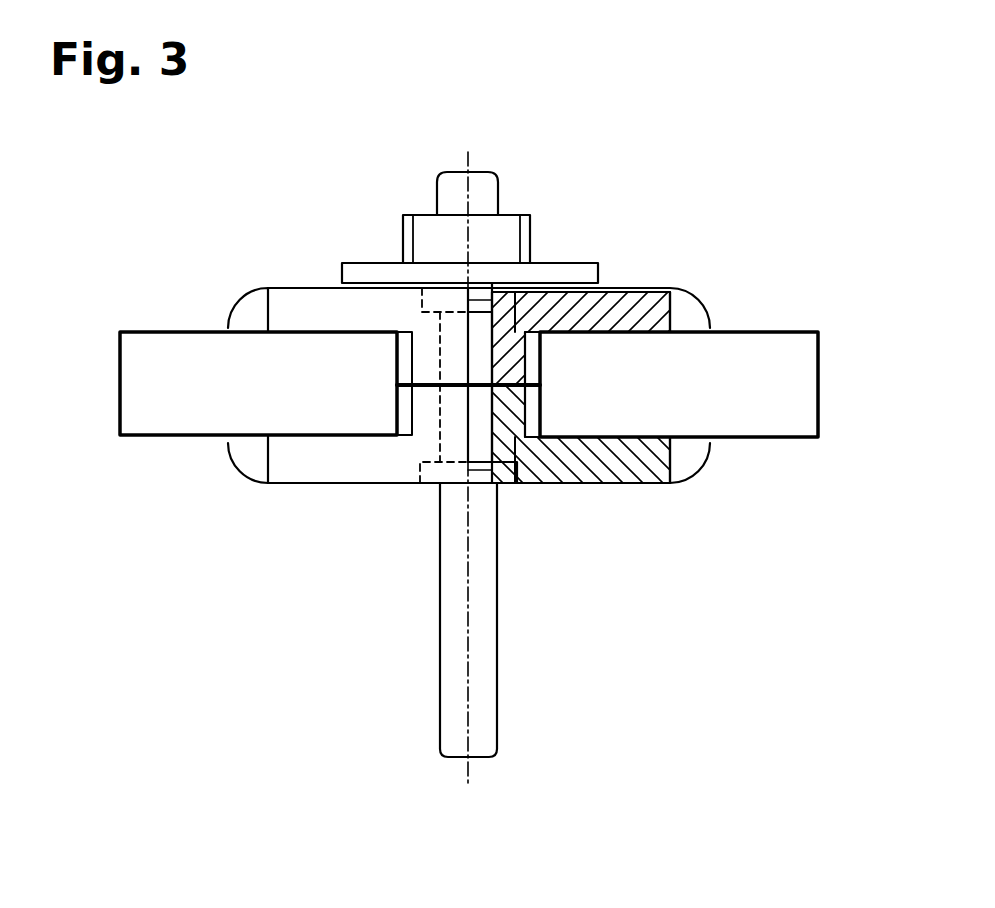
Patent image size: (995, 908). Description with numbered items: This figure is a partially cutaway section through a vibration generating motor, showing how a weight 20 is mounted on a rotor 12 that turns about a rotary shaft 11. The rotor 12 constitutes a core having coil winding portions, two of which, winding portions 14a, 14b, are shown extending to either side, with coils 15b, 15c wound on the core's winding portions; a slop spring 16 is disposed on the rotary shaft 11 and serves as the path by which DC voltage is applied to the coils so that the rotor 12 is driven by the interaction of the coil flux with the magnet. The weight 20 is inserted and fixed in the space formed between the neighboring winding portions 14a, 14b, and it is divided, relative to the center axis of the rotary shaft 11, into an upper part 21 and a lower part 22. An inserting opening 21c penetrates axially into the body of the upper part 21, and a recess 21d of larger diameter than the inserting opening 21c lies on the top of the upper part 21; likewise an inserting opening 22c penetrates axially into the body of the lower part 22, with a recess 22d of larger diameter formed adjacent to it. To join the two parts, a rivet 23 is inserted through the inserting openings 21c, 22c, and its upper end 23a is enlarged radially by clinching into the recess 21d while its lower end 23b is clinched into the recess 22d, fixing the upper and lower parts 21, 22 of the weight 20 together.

The rotary shaft 11 is at (492, 667).
The rotor 12 is at (753, 235).
The coil winding portion 14a is at (793, 330).
The coil winding portion 14b is at (157, 330).
The coil 15b is at (240, 307).
The coil 15c is at (690, 313).
The slop spring 16 is at (430, 217).
The weight 20 is at (300, 287).
The upper part 21 is at (637, 290).
The inserting opening 21c is at (463, 338).
The recess 21d is at (498, 305).
The lower part 22 is at (632, 482).
The inserting opening 22c is at (495, 425).
The recess 22d is at (508, 485).
The rivet 23 is at (545, 378).
The upper end of rivet 23a is at (481, 298).
The lower end of rivet 23b is at (478, 487).